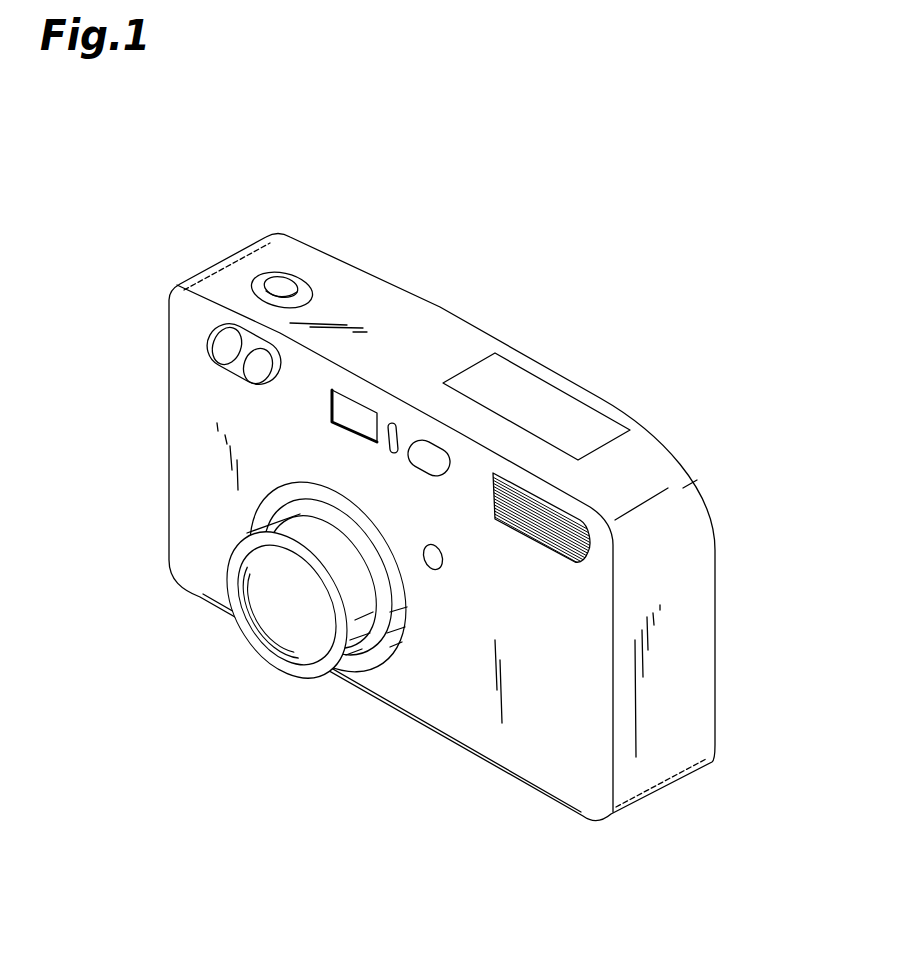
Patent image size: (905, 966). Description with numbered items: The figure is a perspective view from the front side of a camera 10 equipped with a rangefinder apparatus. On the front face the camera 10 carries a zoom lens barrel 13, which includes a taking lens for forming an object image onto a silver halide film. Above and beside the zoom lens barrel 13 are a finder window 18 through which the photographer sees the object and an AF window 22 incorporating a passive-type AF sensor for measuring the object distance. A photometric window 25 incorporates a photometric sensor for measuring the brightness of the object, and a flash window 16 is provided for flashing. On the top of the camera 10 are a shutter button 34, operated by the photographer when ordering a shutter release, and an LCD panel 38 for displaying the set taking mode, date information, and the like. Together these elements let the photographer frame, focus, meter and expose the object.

The camera 10 is at (513, 317).
The zoom lens barrel 13 is at (310, 637).
The flash window 16 is at (560, 523).
The finder window 18 is at (356, 412).
The AF window 22 is at (240, 367).
The photometric window 25 is at (433, 568).
The shutter button 34 is at (278, 284).
The LCD panel 38 is at (537, 405).